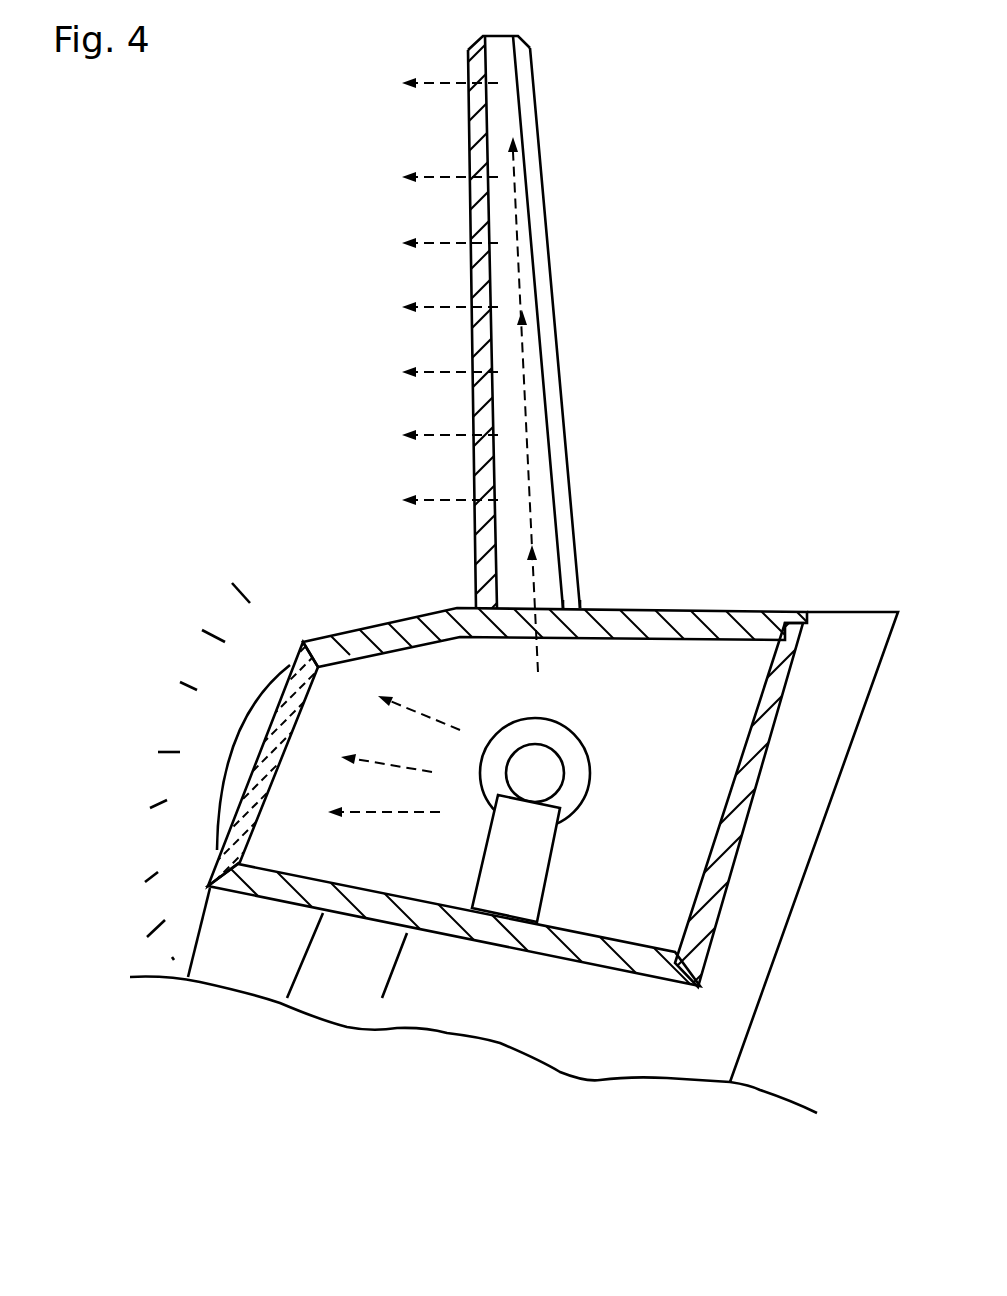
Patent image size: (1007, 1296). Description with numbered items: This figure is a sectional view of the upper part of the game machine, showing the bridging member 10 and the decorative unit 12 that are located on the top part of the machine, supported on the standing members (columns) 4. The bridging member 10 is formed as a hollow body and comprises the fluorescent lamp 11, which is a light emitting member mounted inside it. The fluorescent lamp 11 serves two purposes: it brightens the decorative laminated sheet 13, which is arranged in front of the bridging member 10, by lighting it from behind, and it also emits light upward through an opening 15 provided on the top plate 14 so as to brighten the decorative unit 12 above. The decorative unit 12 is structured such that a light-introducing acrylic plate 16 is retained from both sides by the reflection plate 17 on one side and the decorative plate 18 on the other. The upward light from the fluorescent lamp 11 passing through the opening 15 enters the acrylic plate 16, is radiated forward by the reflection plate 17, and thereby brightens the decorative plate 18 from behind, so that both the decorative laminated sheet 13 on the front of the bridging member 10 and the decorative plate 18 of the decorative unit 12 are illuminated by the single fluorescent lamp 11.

The standing members (columns) 4 is at (817, 803).
The bridging member 10 is at (523, 766).
The fluorescent lamp 11 is at (597, 772).
The decorative unit 12 is at (503, 346).
The decorative laminated sheet 13 is at (227, 818).
The top plate 14 is at (688, 610).
The opening 15 is at (550, 617).
The acrylic plate 16 is at (518, 282).
The reflection plate 17 is at (542, 184).
The decorative plate 18 is at (473, 403).